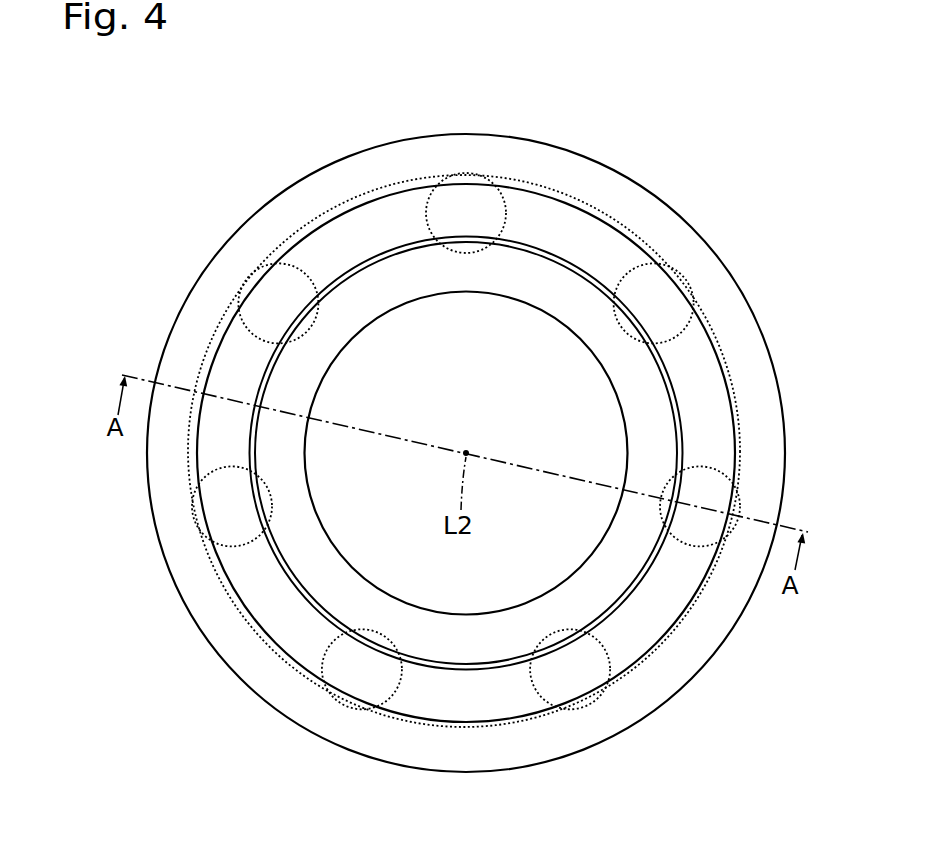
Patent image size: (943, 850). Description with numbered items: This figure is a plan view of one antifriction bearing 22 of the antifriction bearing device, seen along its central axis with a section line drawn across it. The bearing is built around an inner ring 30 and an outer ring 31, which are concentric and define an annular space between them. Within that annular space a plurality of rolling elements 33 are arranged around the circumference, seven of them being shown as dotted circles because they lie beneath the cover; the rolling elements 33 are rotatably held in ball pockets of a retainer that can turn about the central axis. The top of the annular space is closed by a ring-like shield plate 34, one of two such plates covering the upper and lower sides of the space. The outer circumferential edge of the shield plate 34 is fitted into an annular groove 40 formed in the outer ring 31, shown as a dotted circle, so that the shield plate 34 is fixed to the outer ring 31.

The antifriction bearing 22 is at (478, 444).
The inner ring 30 is at (388, 268).
The outer ring 31 is at (466, 431).
The rolling elements 33 is at (305, 278).
The shield plate 34 is at (541, 208).
The annular groove 40 is at (717, 318).